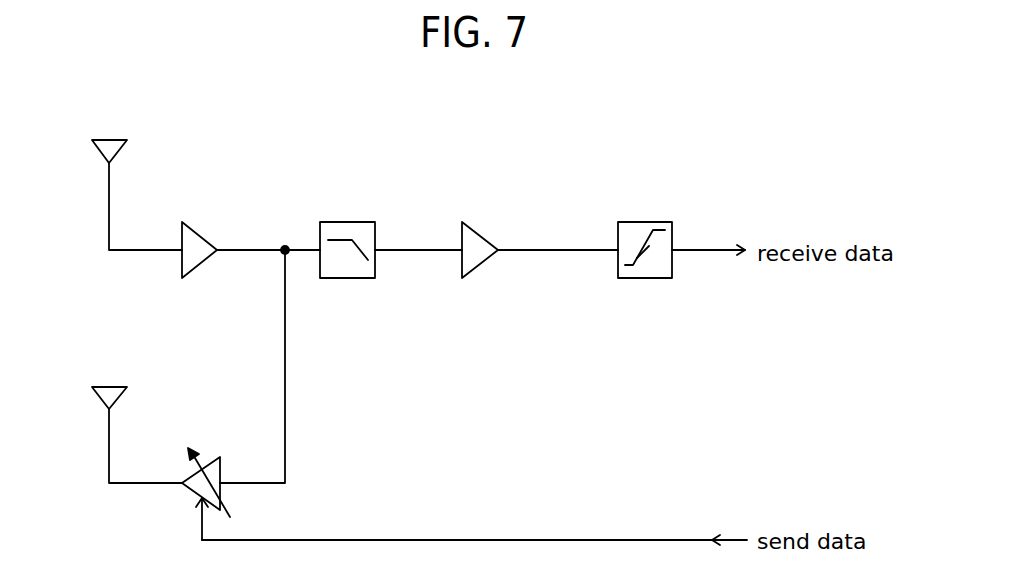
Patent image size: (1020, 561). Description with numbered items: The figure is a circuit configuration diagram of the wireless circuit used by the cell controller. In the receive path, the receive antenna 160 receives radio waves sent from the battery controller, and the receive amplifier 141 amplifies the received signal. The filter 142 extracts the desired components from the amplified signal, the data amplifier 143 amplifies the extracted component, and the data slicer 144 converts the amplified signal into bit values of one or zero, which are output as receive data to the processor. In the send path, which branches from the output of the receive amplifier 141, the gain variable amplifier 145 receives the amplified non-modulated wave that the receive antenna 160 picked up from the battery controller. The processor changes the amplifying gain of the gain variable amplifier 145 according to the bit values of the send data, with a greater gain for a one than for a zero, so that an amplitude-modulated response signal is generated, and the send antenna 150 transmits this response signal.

The receive antenna 160 is at (100, 140).
The receive amplifier 141 is at (200, 232).
The filter 142 is at (347, 222).
The data amplifier 143 is at (480, 231).
The data slicer 144 is at (643, 222).
The send antenna 150 is at (108, 387).
The gain variable amplifier 145 is at (220, 457).